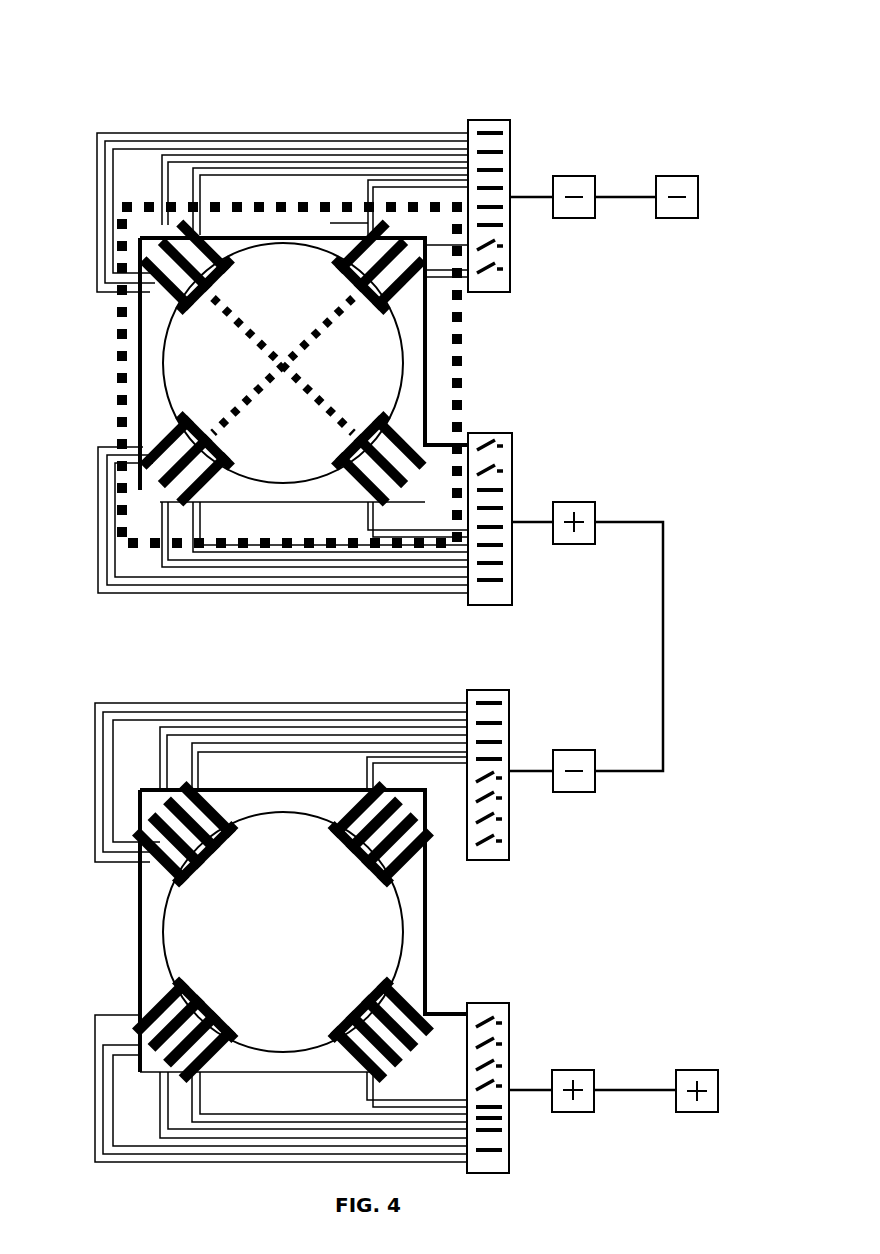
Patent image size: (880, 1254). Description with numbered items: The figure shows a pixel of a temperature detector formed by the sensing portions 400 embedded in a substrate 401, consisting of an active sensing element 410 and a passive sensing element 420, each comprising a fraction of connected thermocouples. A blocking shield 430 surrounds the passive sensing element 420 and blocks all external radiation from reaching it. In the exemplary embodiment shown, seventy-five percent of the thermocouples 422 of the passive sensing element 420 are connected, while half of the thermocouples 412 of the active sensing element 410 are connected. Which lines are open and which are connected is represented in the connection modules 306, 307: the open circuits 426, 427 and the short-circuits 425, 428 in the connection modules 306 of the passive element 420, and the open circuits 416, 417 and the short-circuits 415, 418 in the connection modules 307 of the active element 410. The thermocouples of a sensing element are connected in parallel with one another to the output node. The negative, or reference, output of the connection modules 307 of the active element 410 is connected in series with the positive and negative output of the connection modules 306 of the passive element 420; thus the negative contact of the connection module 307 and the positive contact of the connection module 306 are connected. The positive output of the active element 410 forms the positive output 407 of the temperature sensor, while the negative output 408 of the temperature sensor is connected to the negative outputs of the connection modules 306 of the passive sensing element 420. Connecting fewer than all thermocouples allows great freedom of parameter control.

The sensing portions 400 is at (118, 106).
The passive sensing element 420 is at (541, 386).
The thermocouples of the passive sensing element 422 is at (282, 342).
The short-circuit 425 is at (520, 130).
The open circuit 426 is at (512, 283).
The connection module 306 is at (500, 218).
The open circuit 427 is at (516, 447).
The short-circuit 428 is at (505, 537).
The blocking shield 430 is at (116, 330).
The negative output 408 is at (714, 197).
The substrate 401 is at (756, 662).
The active sensing element 410 is at (545, 985).
The thermocouples of the active sensing element 412 is at (281, 913).
The short-circuit 415 is at (514, 700).
The open circuit 416 is at (510, 830).
The connection module 307 is at (500, 782).
The open circuit 417 is at (520, 1060).
The short-circuit 418 is at (495, 1123).
The positive output 407 is at (718, 1091).